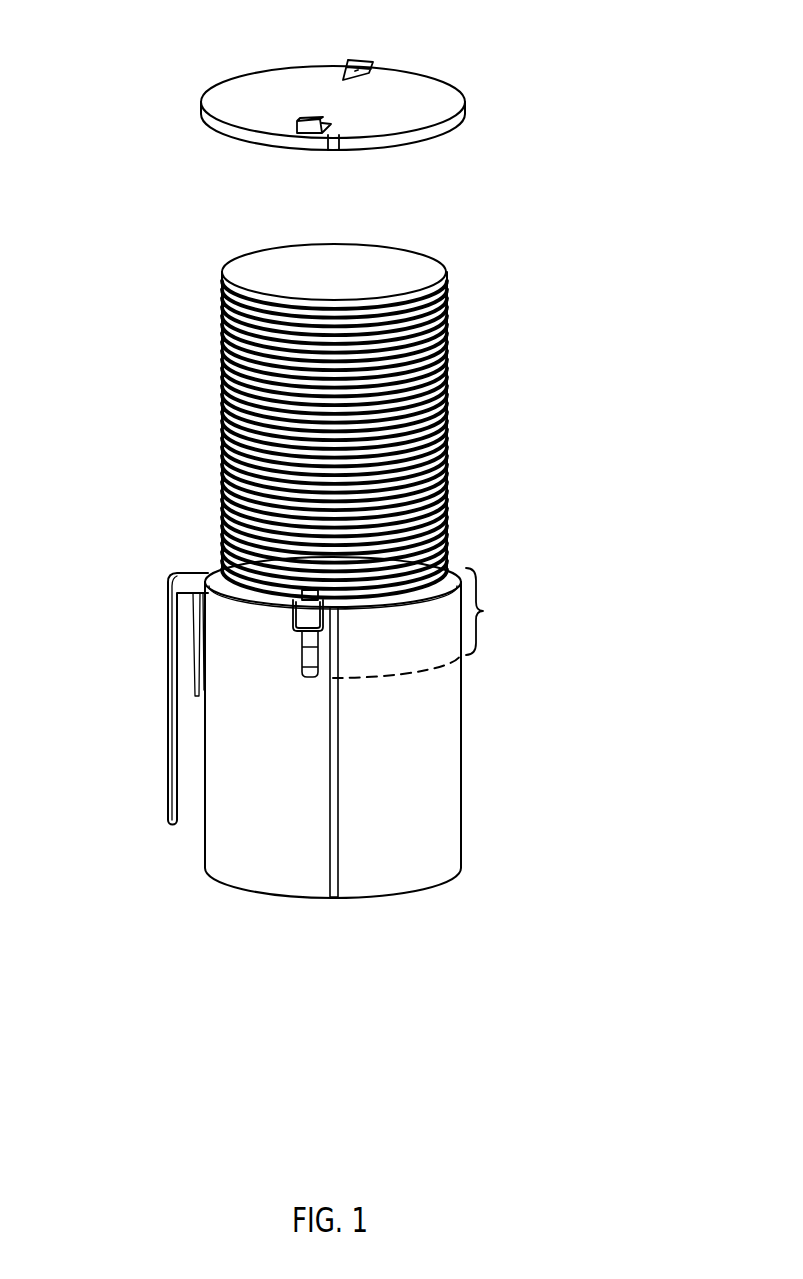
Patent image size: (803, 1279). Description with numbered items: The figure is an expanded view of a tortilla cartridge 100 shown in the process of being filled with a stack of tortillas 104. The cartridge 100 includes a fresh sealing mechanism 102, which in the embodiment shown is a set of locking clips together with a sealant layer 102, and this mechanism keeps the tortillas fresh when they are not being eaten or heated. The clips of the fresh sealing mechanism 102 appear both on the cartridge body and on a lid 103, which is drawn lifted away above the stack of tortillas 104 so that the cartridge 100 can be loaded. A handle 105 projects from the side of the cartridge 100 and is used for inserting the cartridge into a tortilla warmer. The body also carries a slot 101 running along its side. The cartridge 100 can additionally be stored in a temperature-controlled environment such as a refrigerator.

The cartridge 100 is at (557, 753).
The slot 101 is at (350, 861).
The fresh sealing mechanism 102 is at (250, 43).
The lid 103 is at (182, 118).
The stack of tortillas 104 is at (478, 354).
The handle 105 is at (170, 664).